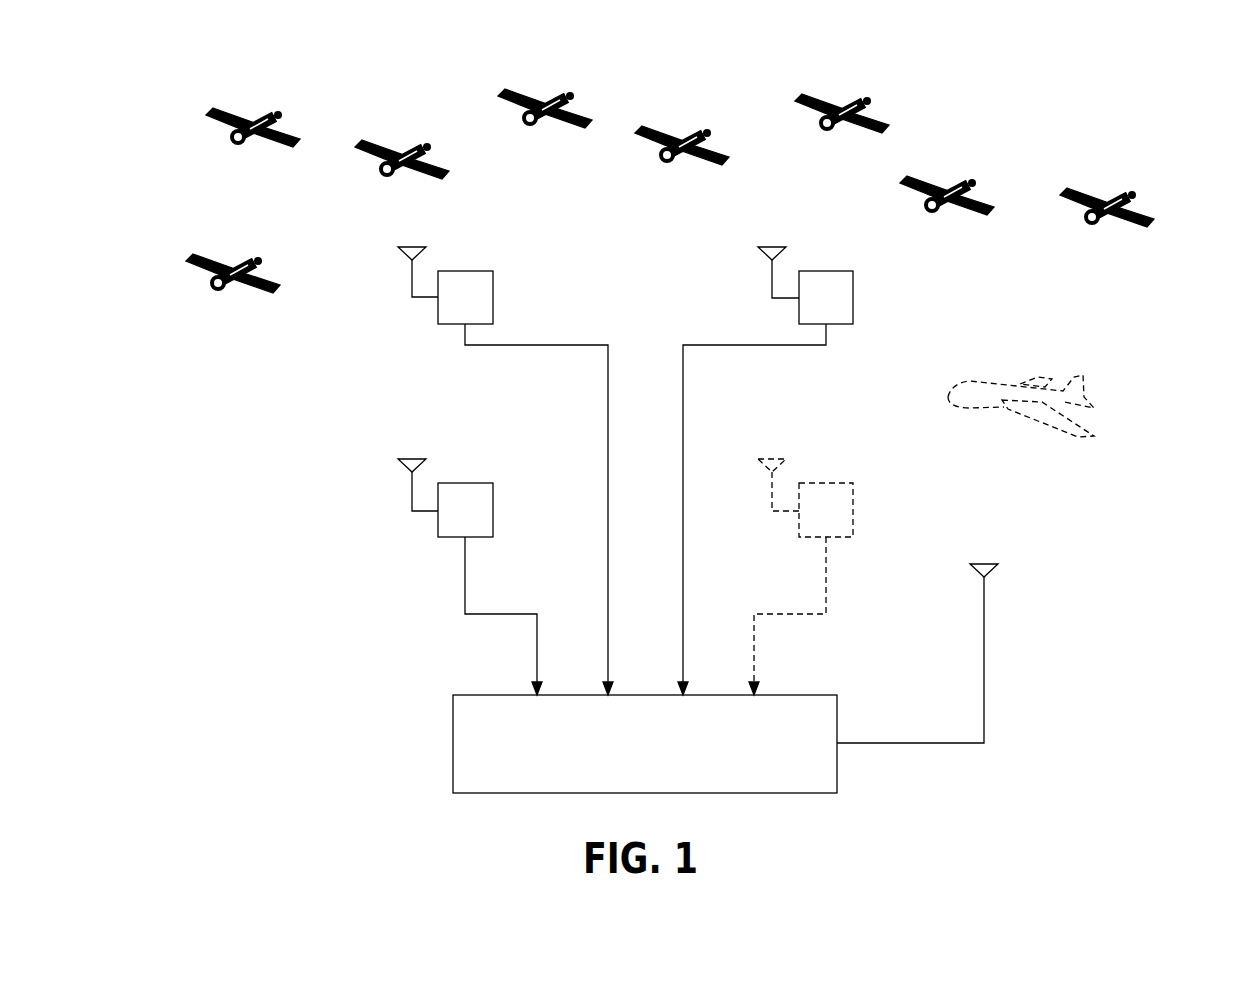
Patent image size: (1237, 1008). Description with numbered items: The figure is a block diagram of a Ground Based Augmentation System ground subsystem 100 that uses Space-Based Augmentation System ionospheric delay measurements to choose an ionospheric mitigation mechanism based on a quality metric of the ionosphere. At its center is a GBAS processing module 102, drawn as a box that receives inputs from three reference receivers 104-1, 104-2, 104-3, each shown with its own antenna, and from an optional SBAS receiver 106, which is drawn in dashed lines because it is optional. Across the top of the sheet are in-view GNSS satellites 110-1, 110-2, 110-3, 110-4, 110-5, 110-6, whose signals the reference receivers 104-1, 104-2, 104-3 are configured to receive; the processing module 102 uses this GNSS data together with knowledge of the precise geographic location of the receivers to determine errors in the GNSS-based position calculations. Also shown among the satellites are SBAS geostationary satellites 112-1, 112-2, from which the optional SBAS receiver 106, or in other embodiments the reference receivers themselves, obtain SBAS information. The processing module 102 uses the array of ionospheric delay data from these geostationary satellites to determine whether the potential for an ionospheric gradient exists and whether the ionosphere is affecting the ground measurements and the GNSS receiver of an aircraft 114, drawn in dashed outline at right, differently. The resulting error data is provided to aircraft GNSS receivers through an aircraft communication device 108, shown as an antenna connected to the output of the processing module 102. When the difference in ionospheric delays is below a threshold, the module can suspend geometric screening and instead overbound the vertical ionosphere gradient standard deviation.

The GBAS ground subsystem 100 is at (294, 515).
The GBAS processing module 102 is at (661, 780).
The reference receiver 104-1 is at (493, 504).
The reference receiver 104-2 is at (493, 292).
The reference receiver 104-3 is at (853, 292).
The optional SBAS receiver 106 is at (853, 504).
The aircraft communication device 108 is at (984, 562).
The GNSS satellite 110-1 is at (261, 259).
The GNSS satellite 110-2 is at (281, 113).
The GNSS satellite 110-3 is at (572, 94).
The GNSS satellite 110-4 is at (709, 131).
The GNSS satellite 110-5 is at (975, 181).
The GNSS satellite 110-6 is at (1134, 193).
The SBAS geostationary satellite 112-1 is at (430, 145).
The SBAS geostationary satellite 112-2 is at (869, 99).
The aircraft 114 is at (1086, 381).